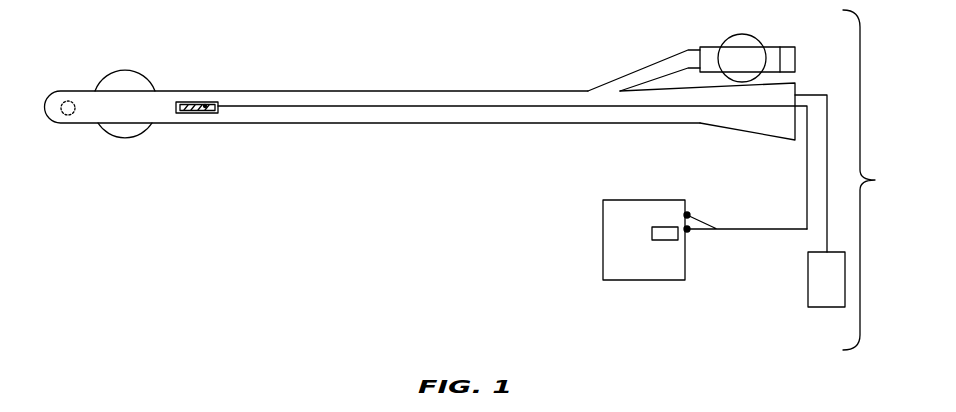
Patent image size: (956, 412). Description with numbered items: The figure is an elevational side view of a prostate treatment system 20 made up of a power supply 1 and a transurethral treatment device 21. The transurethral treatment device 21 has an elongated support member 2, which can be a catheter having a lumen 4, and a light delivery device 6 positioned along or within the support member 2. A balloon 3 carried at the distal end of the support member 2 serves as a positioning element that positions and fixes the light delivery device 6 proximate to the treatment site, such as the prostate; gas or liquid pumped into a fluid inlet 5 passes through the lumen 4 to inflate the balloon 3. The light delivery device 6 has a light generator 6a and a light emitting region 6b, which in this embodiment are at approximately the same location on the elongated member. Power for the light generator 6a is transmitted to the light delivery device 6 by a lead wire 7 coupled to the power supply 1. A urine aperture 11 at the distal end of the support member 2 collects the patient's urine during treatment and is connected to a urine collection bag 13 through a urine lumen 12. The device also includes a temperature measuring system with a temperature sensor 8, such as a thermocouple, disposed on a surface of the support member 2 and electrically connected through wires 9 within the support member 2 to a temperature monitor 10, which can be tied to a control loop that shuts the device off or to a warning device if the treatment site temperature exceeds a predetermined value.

The power supply 1 is at (625, 274).
The elongated support member 2 is at (293, 90).
The balloon 3 is at (125, 73).
The lumen 4 is at (477, 100).
The fluid inlet 5 is at (797, 60).
The light delivery device 6 is at (184, 99).
The light generator 6a is at (186, 103).
The light emitting region 6b is at (219, 138).
The lead wire 7 is at (348, 107).
The temperature sensor 8 is at (205, 105).
The wires 9 is at (702, 214).
The temperature monitor 10 is at (667, 236).
The urine aperture 11 is at (69, 101).
The urine lumen 12 is at (415, 116).
The urine collection bag 13 is at (827, 280).
The prostate treatment system 20 is at (873, 180).
The transurethral treatment device 21 is at (575, 68).